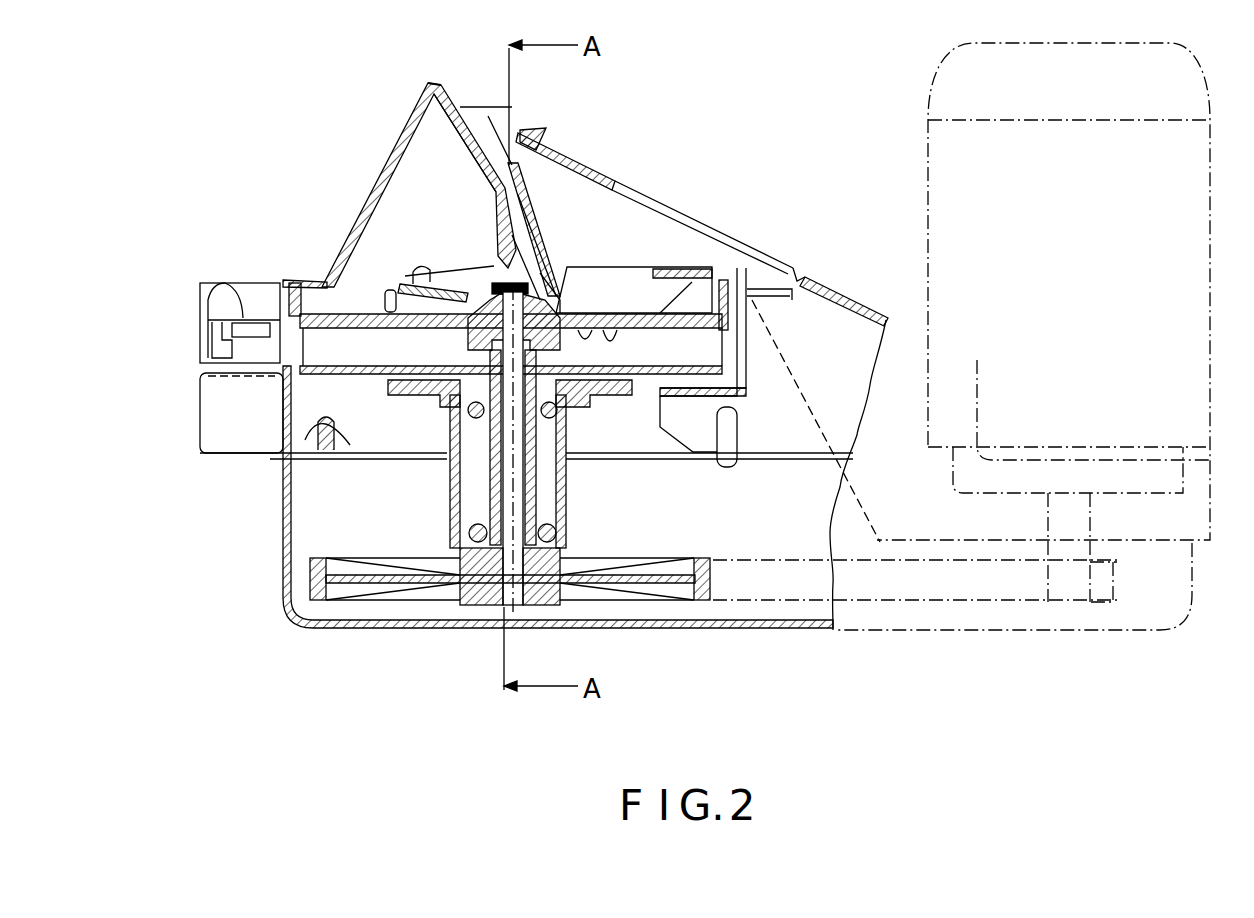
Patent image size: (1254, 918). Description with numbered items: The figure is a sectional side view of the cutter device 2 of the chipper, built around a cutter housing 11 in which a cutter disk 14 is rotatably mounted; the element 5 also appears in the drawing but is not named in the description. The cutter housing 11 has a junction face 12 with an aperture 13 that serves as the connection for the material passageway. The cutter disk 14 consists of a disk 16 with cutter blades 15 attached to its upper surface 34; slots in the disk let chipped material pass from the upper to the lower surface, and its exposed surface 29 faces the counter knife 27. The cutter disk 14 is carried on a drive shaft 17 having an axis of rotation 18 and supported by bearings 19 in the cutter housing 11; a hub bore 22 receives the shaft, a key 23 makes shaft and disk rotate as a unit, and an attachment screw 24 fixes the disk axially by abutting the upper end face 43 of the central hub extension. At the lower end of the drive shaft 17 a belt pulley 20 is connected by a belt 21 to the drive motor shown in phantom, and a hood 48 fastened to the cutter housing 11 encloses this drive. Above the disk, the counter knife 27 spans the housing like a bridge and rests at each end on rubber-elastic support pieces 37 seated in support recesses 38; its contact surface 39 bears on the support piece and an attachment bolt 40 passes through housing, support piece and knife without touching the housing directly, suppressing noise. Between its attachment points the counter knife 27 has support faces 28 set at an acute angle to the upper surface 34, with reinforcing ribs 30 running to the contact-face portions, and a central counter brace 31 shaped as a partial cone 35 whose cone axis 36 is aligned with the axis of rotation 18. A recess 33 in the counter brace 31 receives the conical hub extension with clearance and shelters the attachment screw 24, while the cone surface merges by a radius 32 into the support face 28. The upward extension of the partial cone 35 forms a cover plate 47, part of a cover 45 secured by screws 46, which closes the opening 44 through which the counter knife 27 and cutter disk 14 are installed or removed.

The cutter device 2 is at (293, 247).
The control box 5 is at (220, 424).
The cutter housing 11 is at (513, 163).
The junction face 12 is at (577, 163).
The aperture 13 is at (540, 140).
The cutter disk 14 is at (757, 317).
The cutter blades 15 is at (707, 277).
The disk 16 is at (627, 345).
The drive shaft 17 is at (513, 583).
The axis of rotation 18 is at (462, 447).
The bearings 19 is at (560, 410).
The belt pulley 20 is at (707, 597).
The belt 21 is at (777, 583).
The hub bore 22 is at (457, 413).
The key 23 is at (393, 373).
The attachment screw 24 is at (553, 300).
The counter knife 27 is at (470, 283).
The support faces 28 is at (487, 277).
The exposed surface 29 is at (639, 288).
The reinforcing ribs 30 is at (467, 243).
The counter brace 31 is at (517, 227).
The radius 32 is at (513, 217).
The recess 33 is at (540, 273).
The upper surface 34 is at (660, 313).
The partial cone 35 is at (550, 237).
The cone axis 36 is at (543, 257).
The support pieces 37 is at (377, 333).
The support recesses 38 is at (387, 297).
The contact surface 39 is at (443, 343).
The attachment bolt 40 is at (413, 272).
The upper end face 43 is at (500, 250).
The opening 44 is at (488, 116).
The cover 45 is at (403, 127).
The screws 46 is at (218, 280).
The cover plate 47 is at (416, 107).
The hood 48 is at (290, 612).